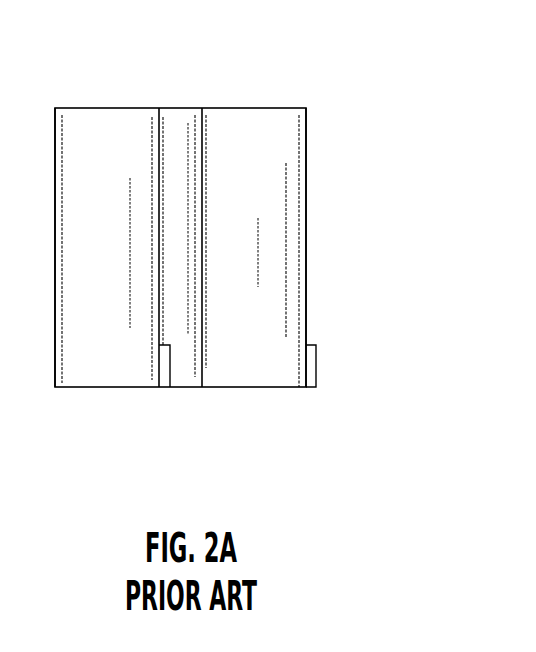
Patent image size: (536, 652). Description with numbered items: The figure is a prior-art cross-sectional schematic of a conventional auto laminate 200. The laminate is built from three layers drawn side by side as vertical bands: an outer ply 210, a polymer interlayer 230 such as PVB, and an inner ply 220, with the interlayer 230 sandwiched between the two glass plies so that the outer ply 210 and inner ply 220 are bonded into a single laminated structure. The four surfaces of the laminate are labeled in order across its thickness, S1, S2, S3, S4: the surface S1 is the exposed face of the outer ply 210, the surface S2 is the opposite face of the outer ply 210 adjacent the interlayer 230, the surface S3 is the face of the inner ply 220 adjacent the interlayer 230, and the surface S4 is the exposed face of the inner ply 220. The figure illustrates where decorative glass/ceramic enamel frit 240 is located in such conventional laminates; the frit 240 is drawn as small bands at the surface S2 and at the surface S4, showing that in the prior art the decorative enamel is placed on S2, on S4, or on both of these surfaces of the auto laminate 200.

The auto laminate 200 is at (392, 249).
The outer ply 210 is at (118, 135).
The inner ply 220 is at (252, 125).
The polymer interlayer 230 is at (177, 115).
The decorative glass/ceramic enamel frit 240 is at (304, 391).
The S1 surface S1 is at (57, 265).
The S2 surface S2 is at (150, 265).
The S3 surface S3 is at (207, 265).
The S4 surface S4 is at (302, 271).